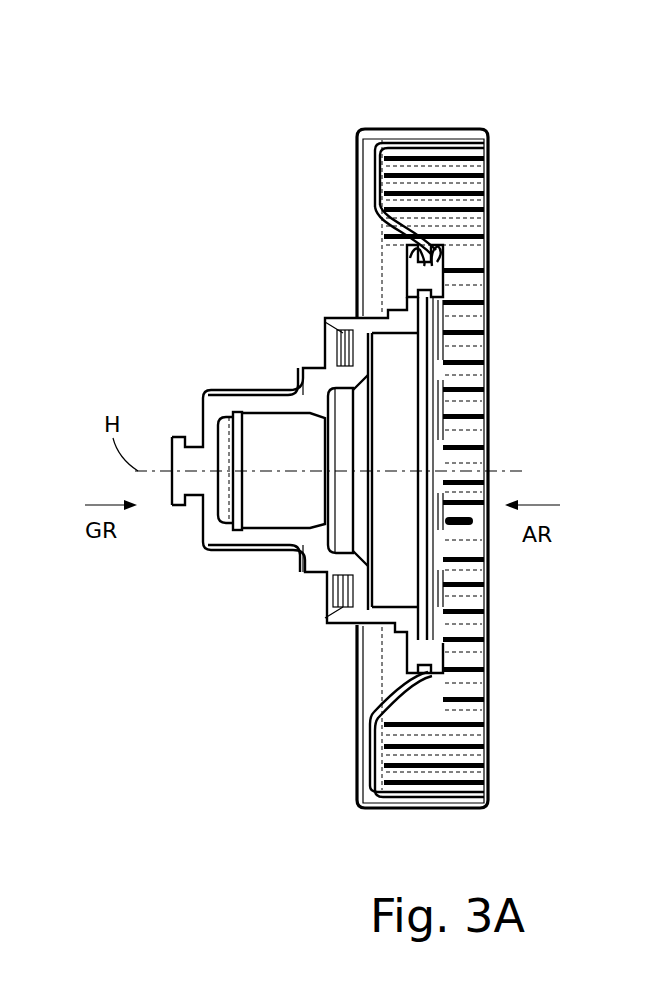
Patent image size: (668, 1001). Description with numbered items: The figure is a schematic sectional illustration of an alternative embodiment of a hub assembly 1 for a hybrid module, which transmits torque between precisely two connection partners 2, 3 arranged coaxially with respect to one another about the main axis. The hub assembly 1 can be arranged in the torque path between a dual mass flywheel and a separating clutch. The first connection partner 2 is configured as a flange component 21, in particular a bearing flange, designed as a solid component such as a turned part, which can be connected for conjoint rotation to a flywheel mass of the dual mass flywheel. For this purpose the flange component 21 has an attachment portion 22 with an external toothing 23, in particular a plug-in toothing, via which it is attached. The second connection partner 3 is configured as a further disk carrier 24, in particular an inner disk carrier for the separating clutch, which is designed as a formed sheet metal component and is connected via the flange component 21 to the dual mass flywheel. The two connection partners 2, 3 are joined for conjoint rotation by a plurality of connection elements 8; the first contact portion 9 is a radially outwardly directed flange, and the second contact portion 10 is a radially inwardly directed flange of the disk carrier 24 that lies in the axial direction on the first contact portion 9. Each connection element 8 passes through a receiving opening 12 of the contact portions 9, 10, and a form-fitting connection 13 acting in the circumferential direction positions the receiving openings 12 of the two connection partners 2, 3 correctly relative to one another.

The hub assembly 1 is at (142, 178).
The first connection partner 2 is at (250, 370).
The flange component 21 is at (250, 370).
The second connection partner 3 is at (444, 110).
The further disk carrier 24 is at (444, 110).
The connection element 8 is at (437, 284).
The first contact portion 9 is at (412, 258).
The second contact portion 10 is at (436, 318).
The receiving opening 12 is at (445, 250).
The form-fitting connection 13 is at (452, 403).
The attachment portion 22 is at (213, 548).
The external toothing 23 is at (265, 558).